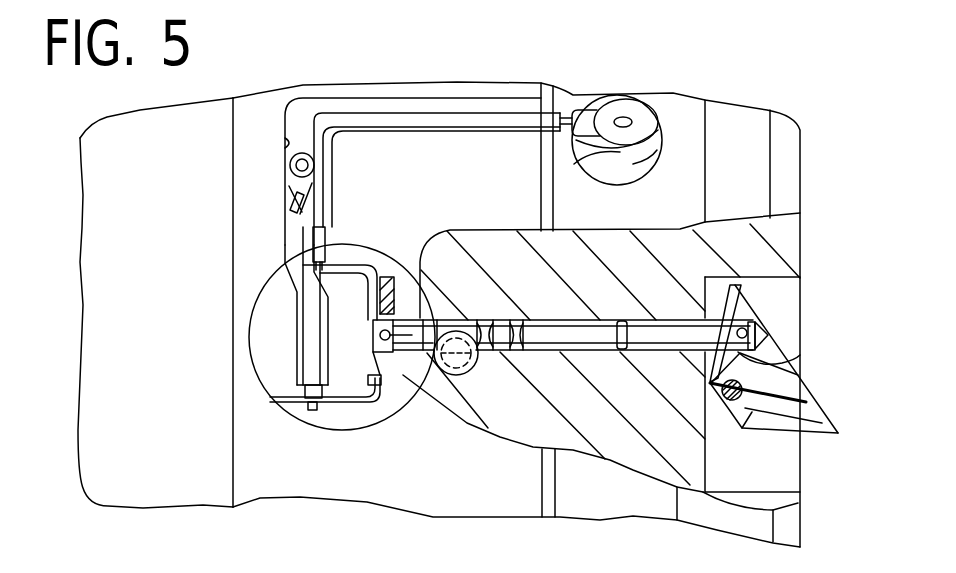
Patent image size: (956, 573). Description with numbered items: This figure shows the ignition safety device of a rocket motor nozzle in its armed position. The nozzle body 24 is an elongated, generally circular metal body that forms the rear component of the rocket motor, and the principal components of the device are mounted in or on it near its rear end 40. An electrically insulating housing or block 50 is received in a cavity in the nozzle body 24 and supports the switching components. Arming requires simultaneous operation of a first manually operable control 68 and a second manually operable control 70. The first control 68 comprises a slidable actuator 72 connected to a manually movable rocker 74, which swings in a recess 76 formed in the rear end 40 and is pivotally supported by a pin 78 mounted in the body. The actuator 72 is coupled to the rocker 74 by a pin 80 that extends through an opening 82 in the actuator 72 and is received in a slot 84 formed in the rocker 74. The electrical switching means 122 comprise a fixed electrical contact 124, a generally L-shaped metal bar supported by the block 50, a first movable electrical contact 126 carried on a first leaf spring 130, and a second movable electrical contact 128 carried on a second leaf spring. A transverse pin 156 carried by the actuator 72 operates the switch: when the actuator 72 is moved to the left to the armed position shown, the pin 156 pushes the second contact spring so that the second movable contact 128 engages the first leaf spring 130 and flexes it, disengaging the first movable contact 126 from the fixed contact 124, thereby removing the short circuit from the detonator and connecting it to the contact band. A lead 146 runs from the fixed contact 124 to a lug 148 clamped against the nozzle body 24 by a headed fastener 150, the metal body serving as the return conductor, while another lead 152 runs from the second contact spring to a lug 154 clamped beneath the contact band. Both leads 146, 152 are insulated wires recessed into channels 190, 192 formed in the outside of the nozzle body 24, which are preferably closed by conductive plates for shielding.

The nozzle body 24 is at (147, 493).
The rear end 40 is at (800, 158).
The housing or block 50 is at (267, 337).
The first manually operable control 68 is at (790, 324).
The second manually operable control 70 is at (477, 377).
The slidable actuator 72 is at (676, 351).
The rocker 74 is at (822, 425).
The recess 76 is at (747, 490).
The pin 78 is at (742, 428).
The pin 80 is at (740, 298).
The opening 82 is at (758, 328).
The slot 84 is at (772, 366).
The electrical switching means 122 is at (377, 408).
The fixed electrical contact 124 is at (370, 366).
The first movable electrical contact 126 is at (383, 400).
The second movable electrical contact 128 is at (376, 378).
The first leaf spring 130 is at (353, 365).
The lead or wire 146 is at (283, 242).
The lug 148 is at (286, 187).
The headed fastener 150 is at (291, 167).
The lead or wire 152 is at (320, 173).
The lug 154 is at (623, 112).
The transverse pin 156 is at (400, 312).
The groove or channel 190 is at (287, 144).
The groove or channel 192 is at (452, 105).